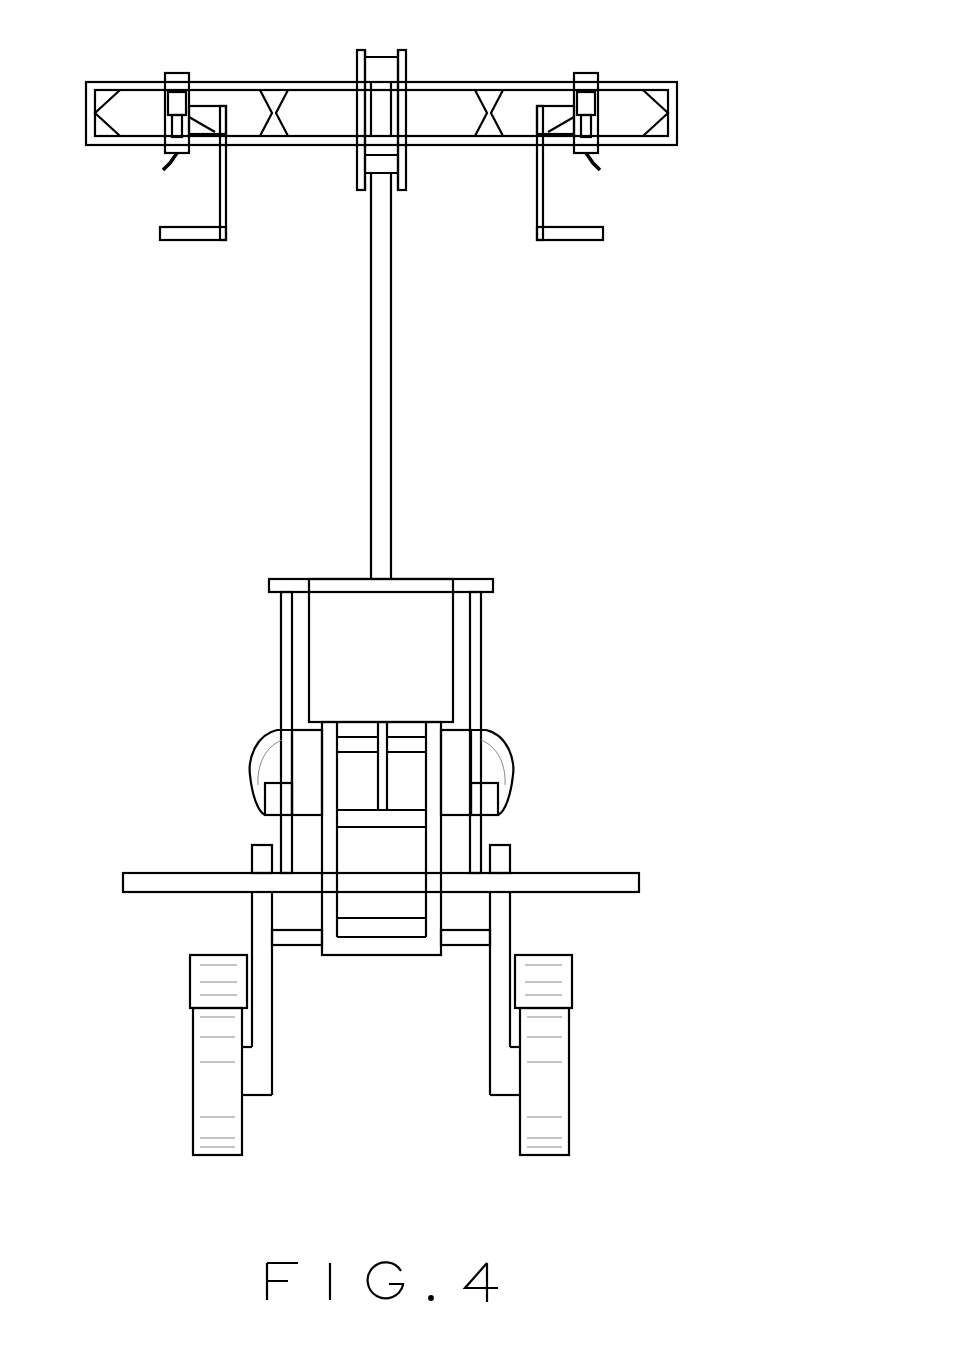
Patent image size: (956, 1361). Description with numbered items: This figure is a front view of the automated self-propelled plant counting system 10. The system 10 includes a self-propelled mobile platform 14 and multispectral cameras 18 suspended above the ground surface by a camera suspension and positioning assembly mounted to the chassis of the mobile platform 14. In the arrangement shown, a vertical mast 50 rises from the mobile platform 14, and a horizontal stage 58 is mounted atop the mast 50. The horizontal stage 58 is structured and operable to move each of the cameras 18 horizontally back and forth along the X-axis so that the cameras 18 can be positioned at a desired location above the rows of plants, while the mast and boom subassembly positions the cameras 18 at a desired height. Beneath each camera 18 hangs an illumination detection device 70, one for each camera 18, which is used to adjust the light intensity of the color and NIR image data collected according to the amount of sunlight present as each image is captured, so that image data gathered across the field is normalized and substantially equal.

The system 10 is at (680, 230).
The self-propelled mobile platform 14 is at (562, 752).
The multispectral camera 18 is at (177, 97).
The mast 50 is at (388, 409).
The horizontal stage 58 is at (452, 87).
The illumination detection device 70 is at (182, 237).